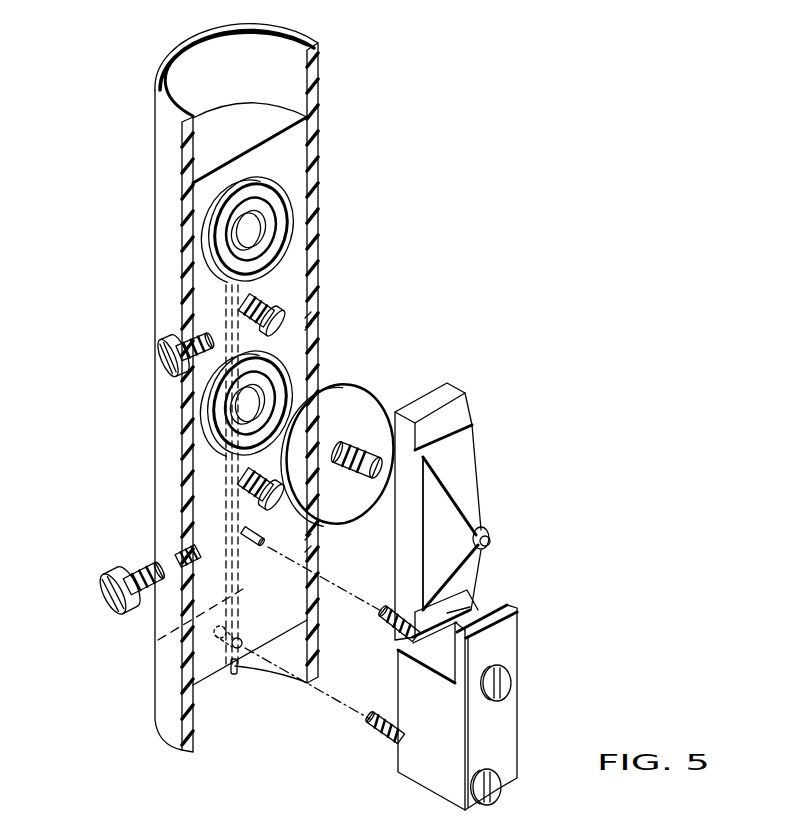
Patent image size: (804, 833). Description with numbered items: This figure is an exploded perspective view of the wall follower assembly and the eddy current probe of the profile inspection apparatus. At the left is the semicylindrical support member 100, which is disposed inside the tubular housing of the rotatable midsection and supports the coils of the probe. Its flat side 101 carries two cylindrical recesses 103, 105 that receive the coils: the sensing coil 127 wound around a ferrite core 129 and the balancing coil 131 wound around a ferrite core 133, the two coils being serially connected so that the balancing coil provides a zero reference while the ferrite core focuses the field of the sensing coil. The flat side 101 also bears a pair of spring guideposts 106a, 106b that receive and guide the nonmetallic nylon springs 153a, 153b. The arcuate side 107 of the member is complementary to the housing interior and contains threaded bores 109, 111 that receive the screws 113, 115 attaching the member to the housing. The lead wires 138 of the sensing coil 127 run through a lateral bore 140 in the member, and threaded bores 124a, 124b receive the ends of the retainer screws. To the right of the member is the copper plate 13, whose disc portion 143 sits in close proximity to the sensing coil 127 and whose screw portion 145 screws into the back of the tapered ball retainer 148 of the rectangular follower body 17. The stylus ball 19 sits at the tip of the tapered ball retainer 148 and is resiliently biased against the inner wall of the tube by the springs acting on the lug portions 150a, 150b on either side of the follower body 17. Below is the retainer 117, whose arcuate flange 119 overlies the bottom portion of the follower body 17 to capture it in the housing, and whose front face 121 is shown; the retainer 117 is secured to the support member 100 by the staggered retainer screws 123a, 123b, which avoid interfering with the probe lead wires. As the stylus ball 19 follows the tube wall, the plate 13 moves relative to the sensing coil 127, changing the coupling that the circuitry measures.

The semicylindrical support member 100 is at (136, 137).
The flat side 101 is at (285, 148).
The arcuate side 107 is at (183, 208).
The cylindrical recess 105 is at (212, 276).
The balancing coil 131 is at (220, 223).
The ferrite core 133 is at (255, 230).
The cylindrical recess 103 is at (210, 443).
The sensing coil 127 is at (273, 367).
The ferrite core 129 is at (250, 400).
The spring guidepost 106a is at (290, 318).
The spring guidepost 106b is at (250, 495).
The nonmetallic spring 153a is at (290, 326).
The nonmetallic spring 153b is at (312, 543).
The threaded bore 109 is at (208, 338).
The screw 113 is at (168, 357).
The threaded bore 111 is at (183, 555).
The screw 115 is at (105, 592).
The lateral bore 140 is at (160, 640).
The threaded bore 124a is at (260, 551).
The threaded bore 124b is at (226, 648).
The lead wires 138 is at (240, 674).
The copper plate 13 is at (372, 430).
The disc portion 143 is at (346, 392).
The screw portion 145 is at (376, 473).
The follower body 17 is at (490, 439).
The lug portion 150a is at (446, 400).
The tapered ball retainer 148 is at (462, 471).
The rolling ball stylus 19 is at (488, 540).
The lug portion 150b is at (452, 607).
The retainer 117 is at (494, 723).
The arcuate flange 119 is at (494, 635).
The block front face 121 is at (425, 738).
The retainer screw 123a is at (513, 682).
The retainer screw 123b is at (500, 783).